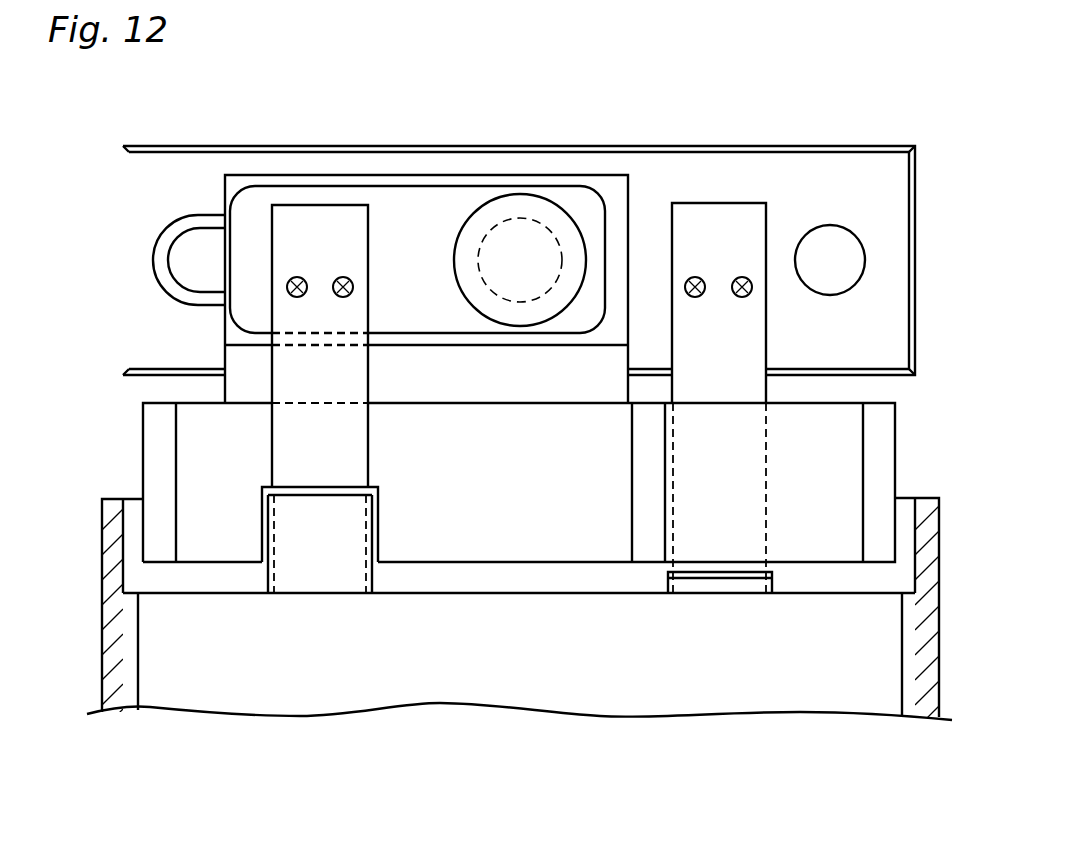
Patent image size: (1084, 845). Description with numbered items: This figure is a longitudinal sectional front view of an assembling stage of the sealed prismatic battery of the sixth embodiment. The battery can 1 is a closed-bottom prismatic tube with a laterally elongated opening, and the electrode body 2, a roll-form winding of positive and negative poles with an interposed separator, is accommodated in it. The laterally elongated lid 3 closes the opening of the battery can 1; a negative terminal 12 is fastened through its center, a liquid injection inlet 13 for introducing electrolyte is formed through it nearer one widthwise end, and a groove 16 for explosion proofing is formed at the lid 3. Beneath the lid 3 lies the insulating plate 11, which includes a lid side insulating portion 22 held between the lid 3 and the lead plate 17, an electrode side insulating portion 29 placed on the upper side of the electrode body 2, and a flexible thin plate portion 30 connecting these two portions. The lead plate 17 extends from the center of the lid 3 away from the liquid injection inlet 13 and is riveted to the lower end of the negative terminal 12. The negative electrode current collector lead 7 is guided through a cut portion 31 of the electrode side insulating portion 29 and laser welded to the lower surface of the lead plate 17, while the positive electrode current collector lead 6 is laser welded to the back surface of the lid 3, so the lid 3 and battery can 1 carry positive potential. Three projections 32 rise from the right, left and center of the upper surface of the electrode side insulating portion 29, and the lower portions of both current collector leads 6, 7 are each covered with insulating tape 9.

The battery can 1 is at (108, 591).
The electrode body 2 is at (448, 678).
The lid 3 is at (733, 128).
The positive electrode current collector lead 6 is at (748, 228).
The negative electrode current collector lead 7 is at (337, 238).
The insulating tape 9 is at (295, 572).
The insulating plate 11 is at (422, 158).
The negative terminal 12 is at (465, 246).
The liquid injection inlet 13 is at (855, 246).
The groove for explosion proofing 16 is at (167, 245).
The lead plate 17 is at (248, 205).
The lid side insulating portion 22 is at (610, 187).
The electrode side insulating portion 29 is at (503, 541).
The thin plate portion 30 is at (470, 383).
The cut portion 31 is at (370, 537).
The projections 32 is at (160, 482).